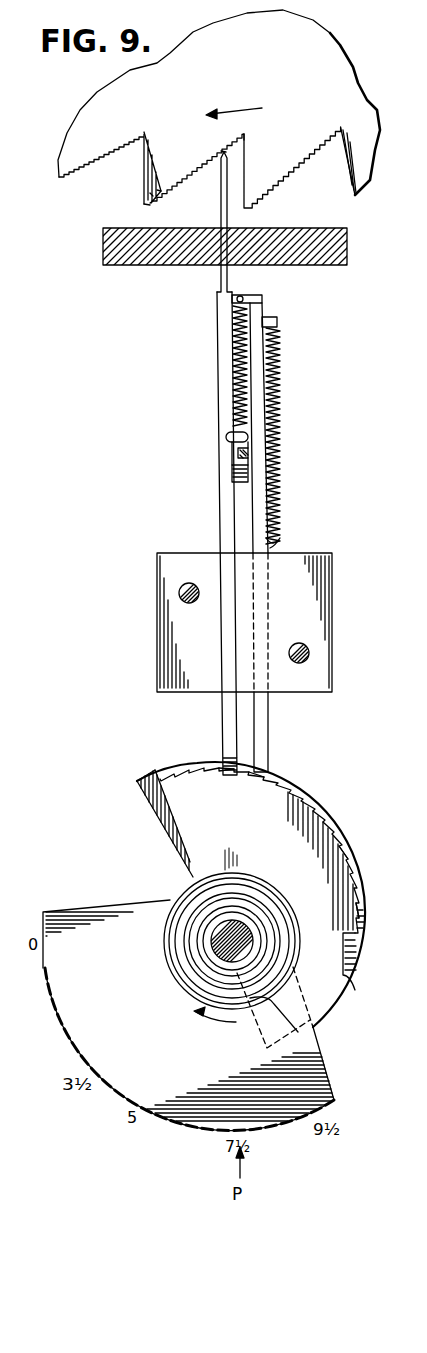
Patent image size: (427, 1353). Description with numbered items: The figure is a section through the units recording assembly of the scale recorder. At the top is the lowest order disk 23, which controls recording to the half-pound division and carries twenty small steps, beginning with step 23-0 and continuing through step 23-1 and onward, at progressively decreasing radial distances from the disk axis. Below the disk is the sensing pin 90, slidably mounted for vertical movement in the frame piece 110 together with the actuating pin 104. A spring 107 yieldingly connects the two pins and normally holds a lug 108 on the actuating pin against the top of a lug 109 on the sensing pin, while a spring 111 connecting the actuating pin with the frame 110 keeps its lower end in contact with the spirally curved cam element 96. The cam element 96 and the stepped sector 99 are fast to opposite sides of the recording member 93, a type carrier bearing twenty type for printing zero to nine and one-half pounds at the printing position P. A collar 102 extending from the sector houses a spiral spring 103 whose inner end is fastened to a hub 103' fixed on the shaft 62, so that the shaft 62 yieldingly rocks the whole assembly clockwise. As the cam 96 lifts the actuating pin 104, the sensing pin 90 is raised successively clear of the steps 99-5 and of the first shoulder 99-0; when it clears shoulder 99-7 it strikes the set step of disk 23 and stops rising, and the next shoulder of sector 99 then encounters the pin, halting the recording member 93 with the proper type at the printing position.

The lowest order disk 23 is at (342, 65).
The step of disk 23 23-0 is at (148, 205).
The step of disk 23 23-1 is at (152, 193).
The sensing pin 90 is at (222, 280).
The actuating pin 104 is at (263, 727).
The spring 107 is at (235, 396).
The lug 108 is at (240, 452).
The lug 109 is at (236, 482).
The spring 111 is at (282, 482).
The frame piece 110 is at (320, 588).
The stepped sector 99 is at (277, 798).
The shoulder of stepped sector 99 99-7 is at (270, 773).
The differential steps of stepped sector 99 99-5 is at (342, 855).
The cam element 96 is at (357, 888).
The shoulder of stepped sector 99 99-0 is at (360, 930).
The recording member 93 is at (313, 1038).
The collar 102 is at (232, 877).
The spiral spring 103 is at (208, 941).
The hub 103' is at (322, 1004).
The shaft 62 is at (232, 941).